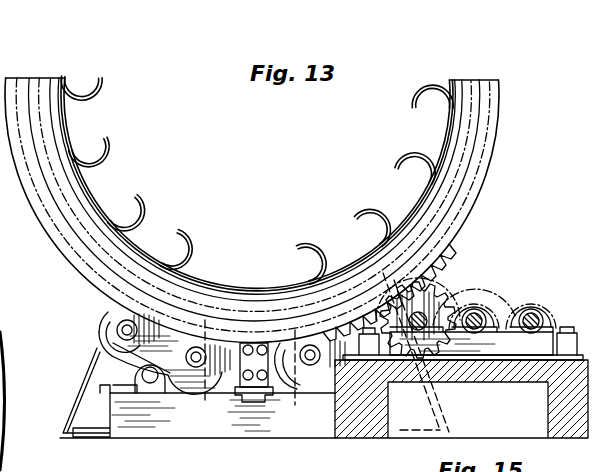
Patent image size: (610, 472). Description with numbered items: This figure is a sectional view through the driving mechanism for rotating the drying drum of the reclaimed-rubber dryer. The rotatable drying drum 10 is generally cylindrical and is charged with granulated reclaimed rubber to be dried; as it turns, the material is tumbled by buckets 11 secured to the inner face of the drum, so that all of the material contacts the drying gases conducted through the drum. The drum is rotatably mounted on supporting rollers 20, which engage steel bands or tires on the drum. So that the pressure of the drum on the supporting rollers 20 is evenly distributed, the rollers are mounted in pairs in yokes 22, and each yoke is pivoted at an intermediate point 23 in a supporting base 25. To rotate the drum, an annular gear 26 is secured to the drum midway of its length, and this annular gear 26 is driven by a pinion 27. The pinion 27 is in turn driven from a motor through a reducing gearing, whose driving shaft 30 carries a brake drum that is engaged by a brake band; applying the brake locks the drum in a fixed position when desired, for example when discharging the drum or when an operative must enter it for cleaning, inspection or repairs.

The rotatable drying drum 10 is at (458, 103).
The buckets 11 is at (394, 166).
The rollers 20 is at (102, 318).
The yokes 22 is at (115, 362).
The pivot 23 is at (150, 382).
The supporting base 25 is at (181, 435).
The annular gear 26 is at (440, 258).
The pinion 27 is at (430, 281).
The driving shaft 30 is at (531, 311).